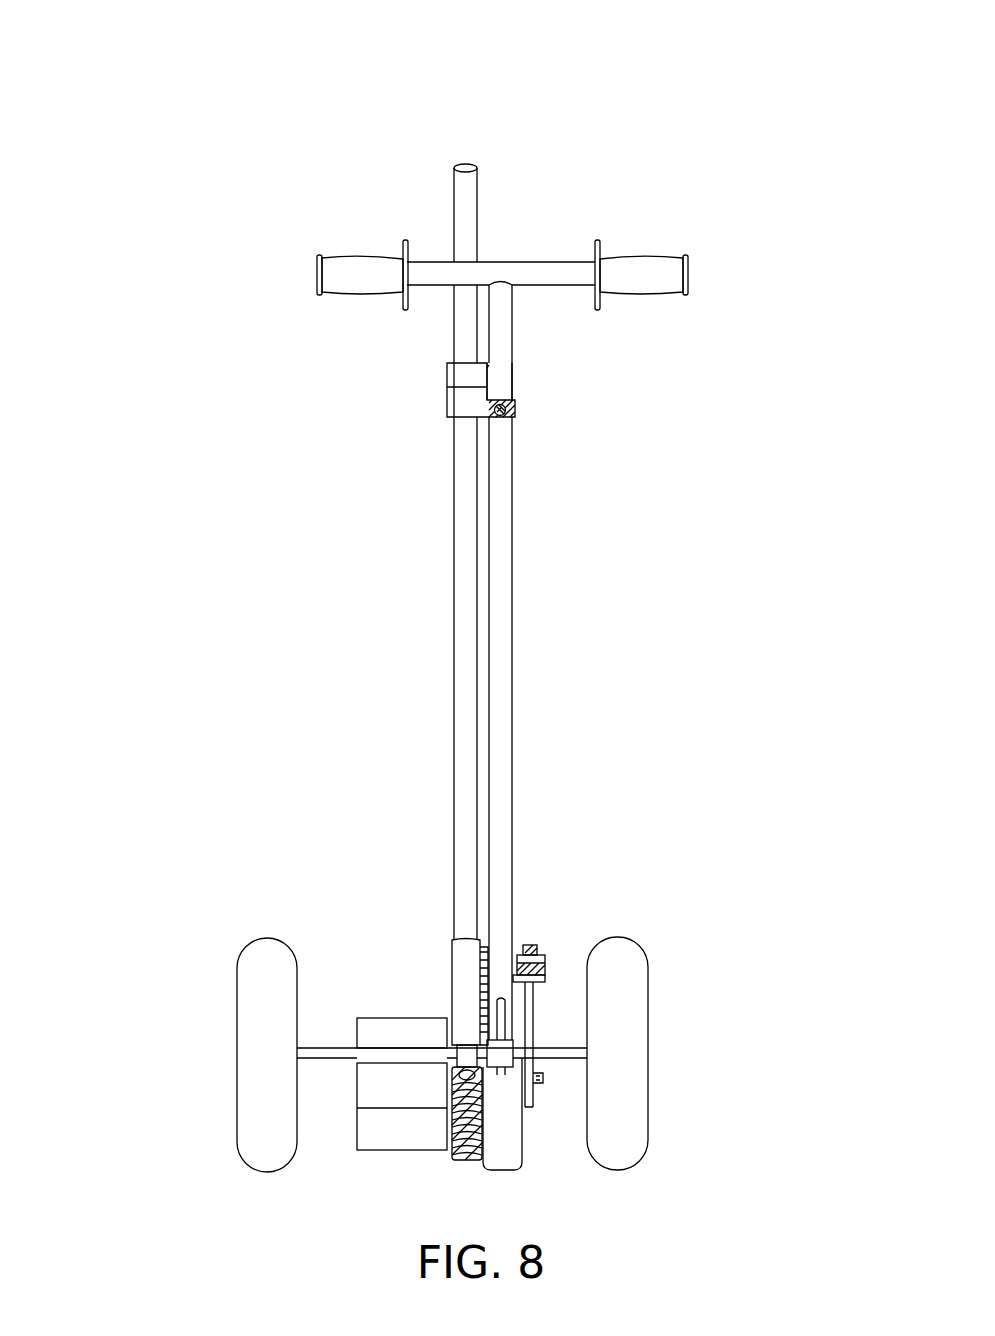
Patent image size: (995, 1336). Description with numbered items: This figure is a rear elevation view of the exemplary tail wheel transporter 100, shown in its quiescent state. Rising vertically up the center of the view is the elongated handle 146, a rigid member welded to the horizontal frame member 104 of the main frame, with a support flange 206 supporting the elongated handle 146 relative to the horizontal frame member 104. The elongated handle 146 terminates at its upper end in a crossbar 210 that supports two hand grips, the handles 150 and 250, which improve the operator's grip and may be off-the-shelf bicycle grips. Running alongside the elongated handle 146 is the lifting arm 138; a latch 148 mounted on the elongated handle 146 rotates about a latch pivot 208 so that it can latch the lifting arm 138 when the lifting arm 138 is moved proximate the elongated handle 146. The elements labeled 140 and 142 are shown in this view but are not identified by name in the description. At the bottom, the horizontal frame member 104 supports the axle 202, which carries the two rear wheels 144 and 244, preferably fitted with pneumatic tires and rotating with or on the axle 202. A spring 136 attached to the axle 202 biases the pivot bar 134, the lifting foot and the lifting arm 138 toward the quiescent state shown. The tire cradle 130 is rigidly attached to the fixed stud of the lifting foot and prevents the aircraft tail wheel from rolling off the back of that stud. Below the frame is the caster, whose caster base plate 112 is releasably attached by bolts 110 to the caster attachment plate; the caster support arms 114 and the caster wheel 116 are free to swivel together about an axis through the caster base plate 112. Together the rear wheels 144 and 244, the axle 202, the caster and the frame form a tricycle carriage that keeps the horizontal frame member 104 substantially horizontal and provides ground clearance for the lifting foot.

The tail wheel transporter 100 is at (470, 62).
The upper end of steering tube 142 is at (465, 173).
The crossbar 210 is at (542, 266).
The handle 150 is at (362, 258).
The handle 250 is at (648, 258).
The lifting arm 138 is at (410, 559).
The steering tube 140 is at (463, 600).
The elongated handle 146 is at (505, 513).
The latch 148 is at (455, 400).
The latch pivot 208 is at (507, 406).
The pivot bar 134 is at (463, 953).
The support flange 206 is at (497, 1007).
The bolts 110 is at (530, 944).
The caster base plate 112 is at (545, 967).
The caster support arms 114 is at (535, 1010).
The axle 202 is at (565, 1047).
The tire cradle 130 is at (428, 1030).
The horizontal frame member 104 is at (496, 1062).
The spring 136 is at (465, 1143).
The caster wheel 116 is at (502, 1153).
The rear wheel 144 is at (250, 1143).
The rear wheel 244 is at (623, 1157).